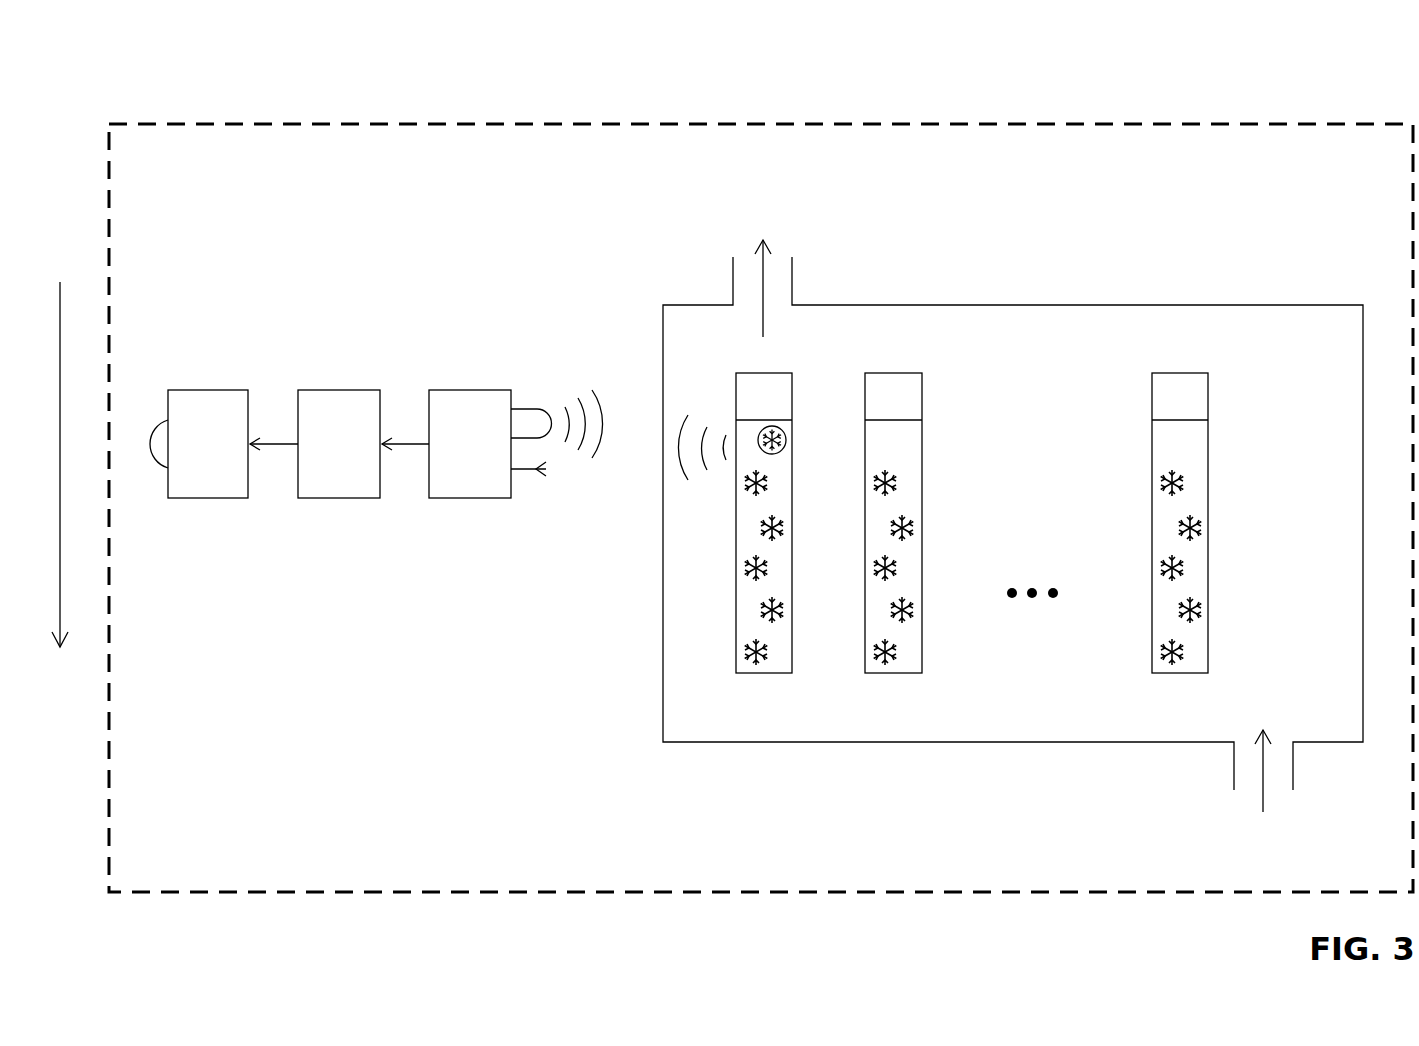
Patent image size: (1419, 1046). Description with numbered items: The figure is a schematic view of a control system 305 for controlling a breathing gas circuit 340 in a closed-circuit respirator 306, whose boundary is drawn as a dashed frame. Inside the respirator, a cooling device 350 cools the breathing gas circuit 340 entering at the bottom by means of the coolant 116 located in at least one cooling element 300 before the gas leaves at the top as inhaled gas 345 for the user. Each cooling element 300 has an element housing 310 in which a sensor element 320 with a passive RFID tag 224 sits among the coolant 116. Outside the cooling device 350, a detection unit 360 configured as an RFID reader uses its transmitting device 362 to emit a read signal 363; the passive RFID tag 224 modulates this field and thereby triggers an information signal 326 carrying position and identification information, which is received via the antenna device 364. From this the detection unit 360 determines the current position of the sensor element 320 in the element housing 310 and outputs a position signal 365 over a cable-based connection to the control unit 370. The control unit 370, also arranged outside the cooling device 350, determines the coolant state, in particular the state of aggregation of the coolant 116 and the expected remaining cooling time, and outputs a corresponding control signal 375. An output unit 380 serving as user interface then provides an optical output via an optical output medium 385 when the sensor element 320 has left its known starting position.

The closed-circuit respirator 306 is at (385, 122).
The control system 305 is at (390, 383).
The output unit 380 is at (188, 475).
The control unit 370 is at (339, 444).
The detection unit 360 is at (470, 444).
The optical output medium 385 is at (143, 455).
The control signal 375 is at (273, 446).
The position signal 365 is at (404, 446).
The transmitting device 362 is at (524, 407).
The read signal 363 is at (612, 416).
The antenna device 364 is at (521, 471).
The information signal 326 is at (683, 455).
The cooling device 350 is at (1065, 290).
The inhaled gas 345 is at (760, 292).
The breathing gas circuit 340 is at (1258, 790).
The cooling element 300 is at (815, 557).
The element housing 310 is at (765, 674).
The passive RFID tag 224 is at (785, 434).
The sensor element 320 is at (779, 452).
The coolant 116 is at (777, 600).